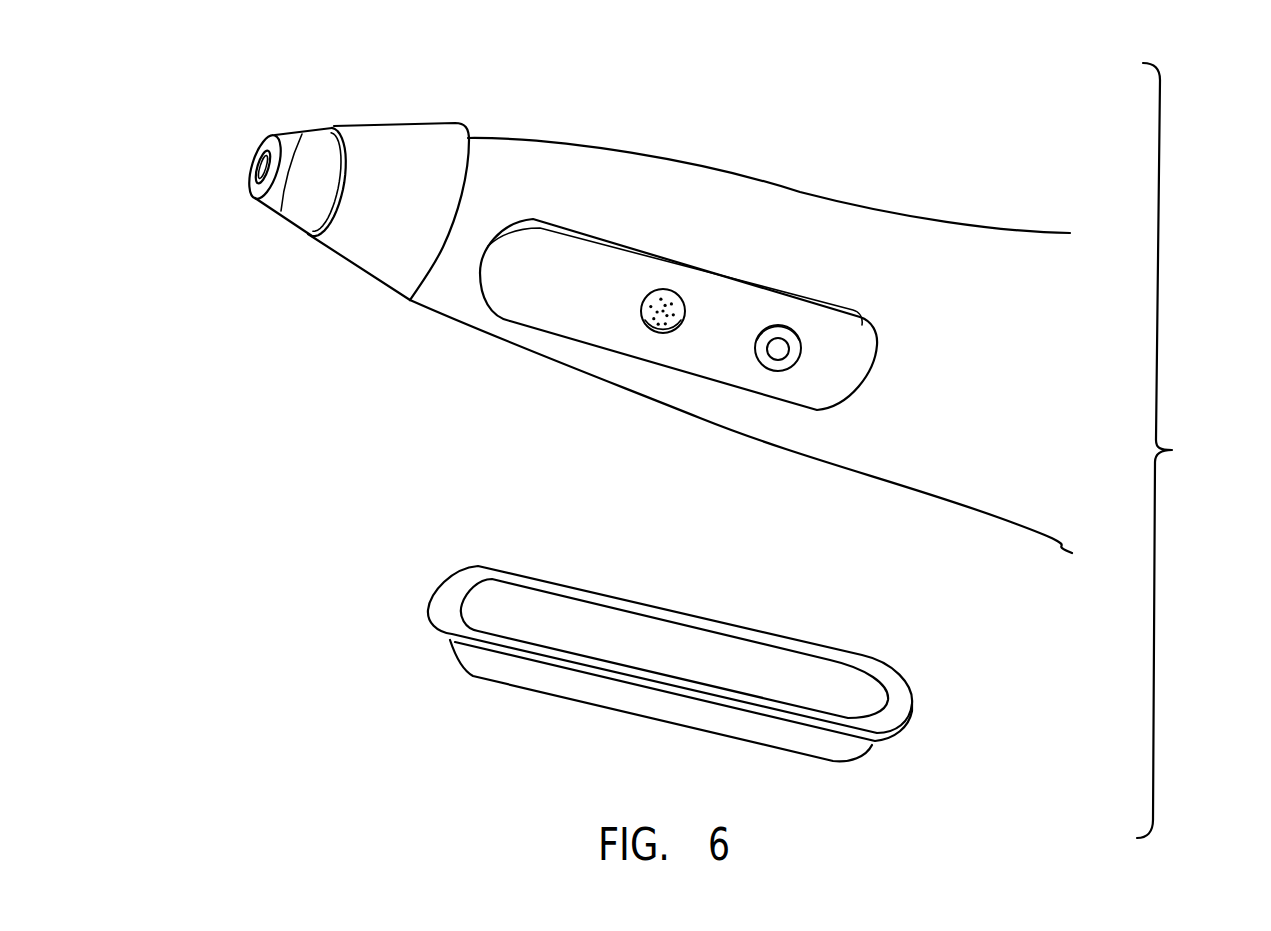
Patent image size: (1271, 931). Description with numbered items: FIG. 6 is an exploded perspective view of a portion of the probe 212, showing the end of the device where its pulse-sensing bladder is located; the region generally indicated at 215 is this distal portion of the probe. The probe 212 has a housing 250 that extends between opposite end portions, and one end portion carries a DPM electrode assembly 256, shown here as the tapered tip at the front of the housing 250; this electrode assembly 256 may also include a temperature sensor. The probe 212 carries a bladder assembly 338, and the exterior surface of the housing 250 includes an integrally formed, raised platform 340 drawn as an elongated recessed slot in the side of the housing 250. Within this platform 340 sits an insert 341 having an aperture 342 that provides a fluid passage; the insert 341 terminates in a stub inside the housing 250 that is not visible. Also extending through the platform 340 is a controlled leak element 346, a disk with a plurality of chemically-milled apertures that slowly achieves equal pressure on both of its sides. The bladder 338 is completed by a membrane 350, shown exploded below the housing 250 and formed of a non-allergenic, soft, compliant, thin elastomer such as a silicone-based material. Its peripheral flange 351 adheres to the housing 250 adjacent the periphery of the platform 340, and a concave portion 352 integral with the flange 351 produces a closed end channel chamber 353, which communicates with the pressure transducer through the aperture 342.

The probe 212 is at (1180, 450).
The distal portion 215 is at (250, 264).
The housing 250 is at (800, 192).
The DPM electrode assembly 256 is at (291, 140).
The bladder assembly 338 is at (474, 533).
The raised platform 340 is at (543, 293).
The insert 341 is at (756, 350).
The aperture 342 is at (798, 362).
The controlled leak element 346 is at (647, 327).
The membrane 350 is at (863, 641).
The peripheral flange 351 is at (713, 627).
The concave portion 352 is at (597, 708).
The closed end channel chamber 353 is at (592, 613).